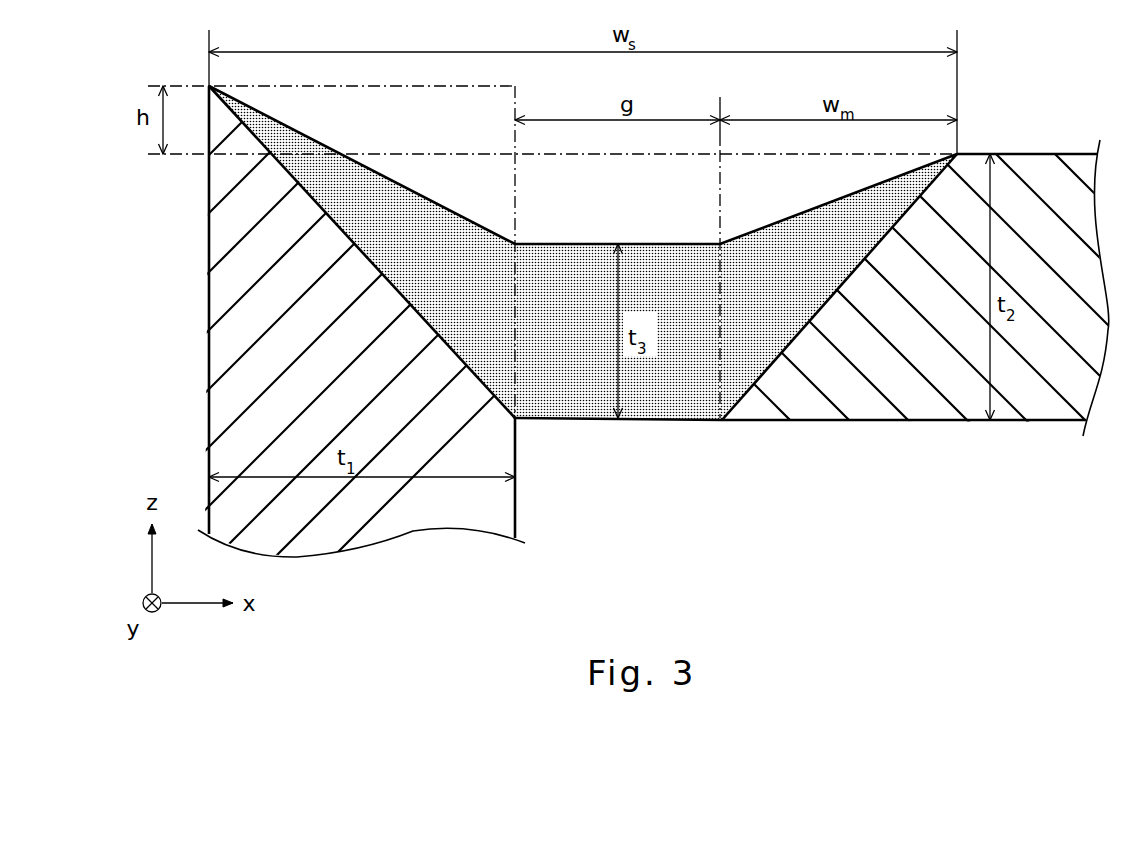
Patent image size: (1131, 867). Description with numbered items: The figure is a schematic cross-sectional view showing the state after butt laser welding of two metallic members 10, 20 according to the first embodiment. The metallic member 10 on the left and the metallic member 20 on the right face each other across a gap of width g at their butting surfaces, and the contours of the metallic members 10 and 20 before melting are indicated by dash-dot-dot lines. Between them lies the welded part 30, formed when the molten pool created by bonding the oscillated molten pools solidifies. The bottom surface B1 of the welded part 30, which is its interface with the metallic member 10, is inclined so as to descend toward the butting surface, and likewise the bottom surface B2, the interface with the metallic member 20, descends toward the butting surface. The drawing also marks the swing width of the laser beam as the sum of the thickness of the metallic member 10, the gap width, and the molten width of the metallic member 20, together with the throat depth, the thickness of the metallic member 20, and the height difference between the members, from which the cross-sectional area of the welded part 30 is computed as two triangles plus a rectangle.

The metallic member 10 is at (213, 343).
The metallic member 20 is at (1023, 160).
The welded part 30 is at (583, 287).
The bottom surface B1 is at (389, 277).
The bottom surface B2 is at (818, 299).